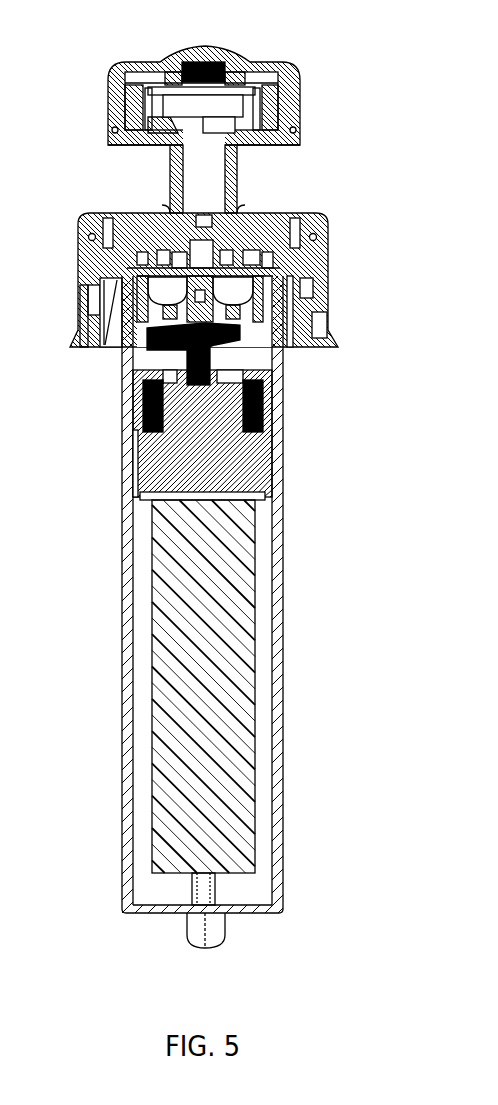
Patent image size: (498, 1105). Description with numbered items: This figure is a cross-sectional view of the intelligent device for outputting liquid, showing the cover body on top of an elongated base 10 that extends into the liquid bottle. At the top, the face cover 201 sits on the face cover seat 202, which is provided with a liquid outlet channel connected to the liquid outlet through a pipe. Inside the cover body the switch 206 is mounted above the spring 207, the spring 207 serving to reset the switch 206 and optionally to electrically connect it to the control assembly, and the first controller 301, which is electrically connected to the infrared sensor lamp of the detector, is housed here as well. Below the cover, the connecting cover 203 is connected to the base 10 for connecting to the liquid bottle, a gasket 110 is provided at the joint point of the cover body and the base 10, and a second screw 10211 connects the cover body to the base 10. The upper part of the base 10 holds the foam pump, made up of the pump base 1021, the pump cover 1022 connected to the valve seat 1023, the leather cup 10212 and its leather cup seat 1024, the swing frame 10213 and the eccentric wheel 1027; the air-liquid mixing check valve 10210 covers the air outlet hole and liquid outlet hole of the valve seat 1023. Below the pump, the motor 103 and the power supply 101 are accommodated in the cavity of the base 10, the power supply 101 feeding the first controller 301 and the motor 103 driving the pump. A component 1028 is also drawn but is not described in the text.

The base 10 is at (280, 625).
The power supply 101 is at (177, 750).
The motor 103 is at (248, 475).
The gasket 110 is at (157, 232).
The pump base 1021 is at (123, 408).
The pump cover 1022 is at (351, 216).
The valve seat 1023 is at (371, 245).
The leather cup seat 1024 is at (275, 310).
The eccentric wheel 1027 is at (282, 462).
The inner sleeve 1028 is at (127, 468).
The air-liquid mixing check valve 10210 is at (222, 247).
The second screw 10211 is at (110, 332).
The leather cup 10212 is at (247, 323).
The swing frame 10213 is at (341, 465).
The face cover 201 is at (280, 63).
The face cover seat 202 is at (152, 147).
The connecting cover 203 is at (90, 295).
The switch 206 is at (207, 50).
The spring 207 is at (233, 65).
The first controller 301 is at (155, 62).